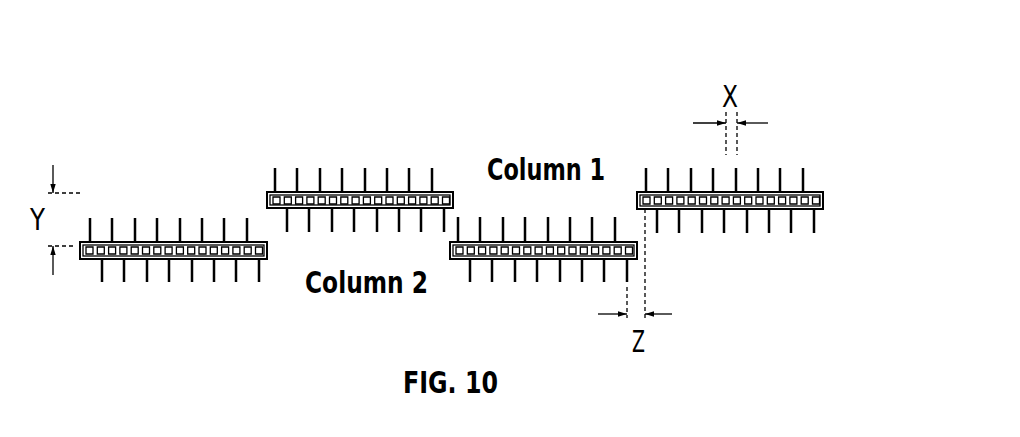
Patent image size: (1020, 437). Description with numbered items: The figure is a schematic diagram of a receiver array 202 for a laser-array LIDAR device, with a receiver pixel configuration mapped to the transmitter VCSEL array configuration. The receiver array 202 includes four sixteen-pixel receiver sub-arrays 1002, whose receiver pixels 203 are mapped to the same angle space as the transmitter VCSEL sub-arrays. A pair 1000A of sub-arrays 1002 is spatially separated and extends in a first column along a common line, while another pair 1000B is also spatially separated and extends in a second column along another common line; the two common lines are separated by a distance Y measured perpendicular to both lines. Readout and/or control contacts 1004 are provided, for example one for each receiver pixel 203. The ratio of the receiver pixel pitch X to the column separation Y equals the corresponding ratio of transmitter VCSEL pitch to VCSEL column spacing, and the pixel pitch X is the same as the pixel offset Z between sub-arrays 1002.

The receiver array 202 is at (142, 137).
The pair of sub-arrays 1000A is at (373, 153).
The pair of sub-arrays 1000B is at (168, 292).
The receiver sub-array 1002 is at (192, 250).
The readout and/or control contacts 1004 is at (135, 219).
The receiver pixel 203 is at (802, 220).